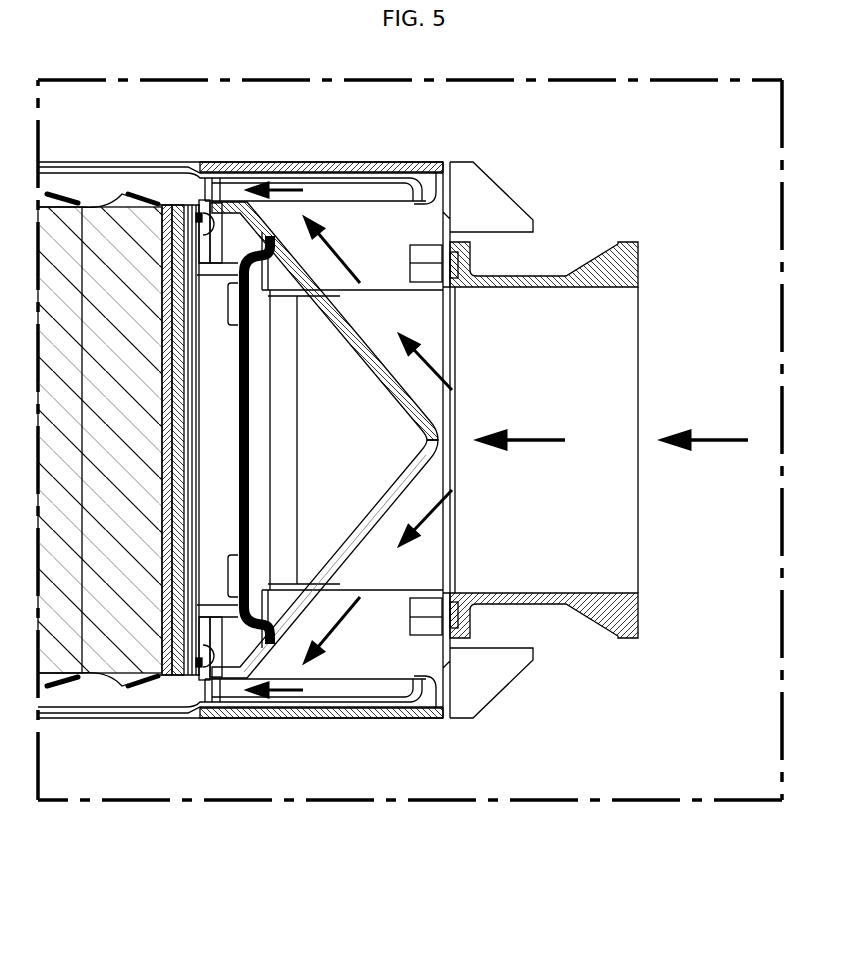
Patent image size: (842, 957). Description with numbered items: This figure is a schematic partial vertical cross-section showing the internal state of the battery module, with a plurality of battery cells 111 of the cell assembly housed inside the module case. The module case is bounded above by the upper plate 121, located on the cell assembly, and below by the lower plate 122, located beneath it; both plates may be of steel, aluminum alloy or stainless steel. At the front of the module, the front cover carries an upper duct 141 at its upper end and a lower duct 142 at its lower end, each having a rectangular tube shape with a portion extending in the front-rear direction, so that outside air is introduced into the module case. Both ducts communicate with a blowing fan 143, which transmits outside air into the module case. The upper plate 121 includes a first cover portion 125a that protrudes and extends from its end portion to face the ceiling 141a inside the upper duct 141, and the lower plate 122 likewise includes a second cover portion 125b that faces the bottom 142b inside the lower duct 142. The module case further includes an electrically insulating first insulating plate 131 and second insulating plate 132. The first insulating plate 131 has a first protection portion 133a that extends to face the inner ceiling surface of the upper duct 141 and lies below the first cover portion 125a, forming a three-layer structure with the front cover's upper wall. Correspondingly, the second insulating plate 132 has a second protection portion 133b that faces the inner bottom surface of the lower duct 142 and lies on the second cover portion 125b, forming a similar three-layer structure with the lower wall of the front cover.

The battery cell 111 is at (140, 220).
The upper plate 121 is at (133, 170).
The lower plate 122 is at (134, 710).
The first insulating plate 131 is at (68, 174).
The second insulating plate 132 is at (95, 703).
The upper duct 141 is at (232, 201).
The lower duct 142 is at (236, 679).
The ceiling inside the upper duct 141a is at (308, 160).
The bottom inside the lower duct 142b is at (308, 718).
The first cover portion 125a is at (440, 180).
The second cover portion 125b is at (367, 710).
The first protection portion 133a is at (420, 183).
The second protection portion 133b is at (407, 703).
The blowing fan 143 is at (627, 242).